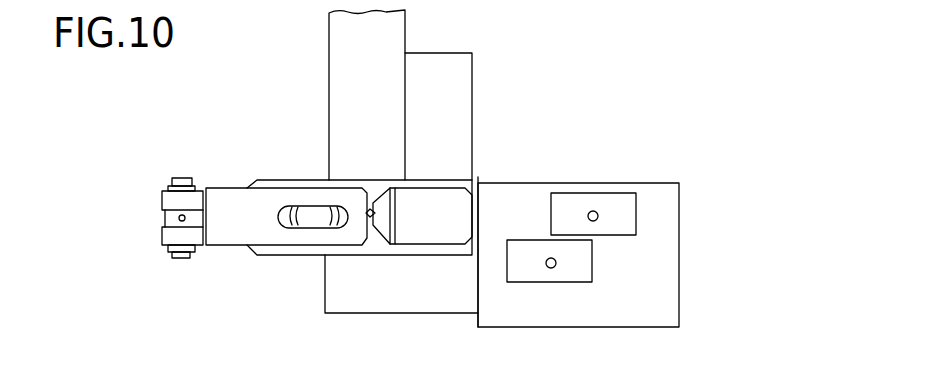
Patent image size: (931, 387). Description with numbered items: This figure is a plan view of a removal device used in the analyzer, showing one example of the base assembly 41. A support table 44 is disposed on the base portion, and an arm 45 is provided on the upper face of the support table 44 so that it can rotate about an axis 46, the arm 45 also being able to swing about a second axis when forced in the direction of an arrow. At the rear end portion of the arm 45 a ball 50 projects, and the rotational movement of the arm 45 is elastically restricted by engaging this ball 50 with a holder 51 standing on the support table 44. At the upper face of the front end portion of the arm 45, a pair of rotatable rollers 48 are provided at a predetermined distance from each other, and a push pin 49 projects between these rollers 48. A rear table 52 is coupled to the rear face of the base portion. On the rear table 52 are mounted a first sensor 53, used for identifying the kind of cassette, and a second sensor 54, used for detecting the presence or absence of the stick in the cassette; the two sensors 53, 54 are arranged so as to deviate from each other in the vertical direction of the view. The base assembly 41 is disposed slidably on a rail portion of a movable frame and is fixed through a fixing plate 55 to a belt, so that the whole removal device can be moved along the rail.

The base assembly 41 is at (746, 132).
The support table 44 is at (334, 285).
The arm 45 is at (260, 203).
The axis 46 is at (312, 218).
The rotatable rollers 48 is at (175, 200).
The push pin 49 is at (178, 218).
The ball 50 is at (373, 213).
The holder 51 is at (443, 200).
The rear table 52 is at (670, 212).
The first sensor 53 is at (577, 270).
The second sensor 54 is at (598, 202).
The fixing plate 55 is at (343, 110).